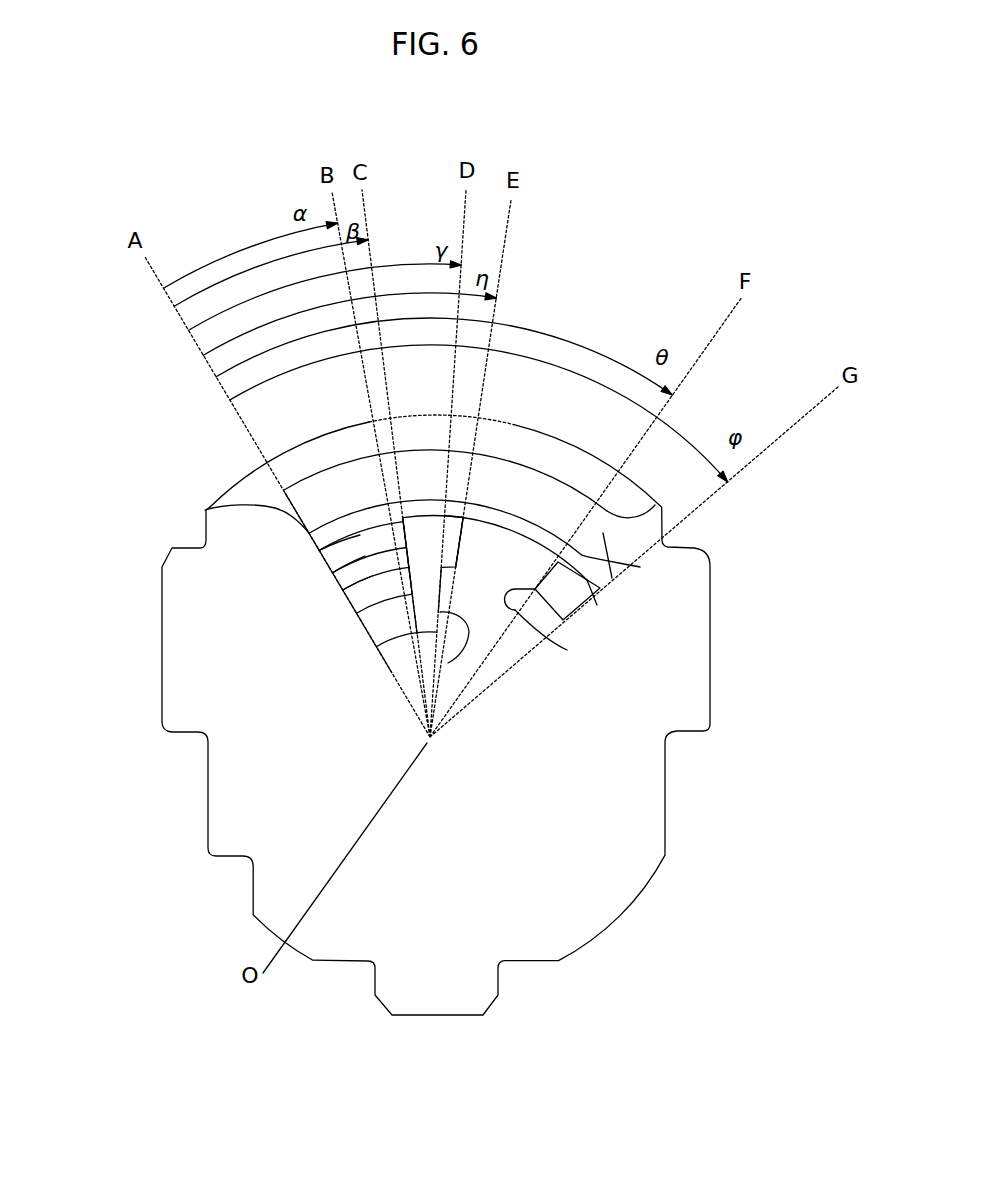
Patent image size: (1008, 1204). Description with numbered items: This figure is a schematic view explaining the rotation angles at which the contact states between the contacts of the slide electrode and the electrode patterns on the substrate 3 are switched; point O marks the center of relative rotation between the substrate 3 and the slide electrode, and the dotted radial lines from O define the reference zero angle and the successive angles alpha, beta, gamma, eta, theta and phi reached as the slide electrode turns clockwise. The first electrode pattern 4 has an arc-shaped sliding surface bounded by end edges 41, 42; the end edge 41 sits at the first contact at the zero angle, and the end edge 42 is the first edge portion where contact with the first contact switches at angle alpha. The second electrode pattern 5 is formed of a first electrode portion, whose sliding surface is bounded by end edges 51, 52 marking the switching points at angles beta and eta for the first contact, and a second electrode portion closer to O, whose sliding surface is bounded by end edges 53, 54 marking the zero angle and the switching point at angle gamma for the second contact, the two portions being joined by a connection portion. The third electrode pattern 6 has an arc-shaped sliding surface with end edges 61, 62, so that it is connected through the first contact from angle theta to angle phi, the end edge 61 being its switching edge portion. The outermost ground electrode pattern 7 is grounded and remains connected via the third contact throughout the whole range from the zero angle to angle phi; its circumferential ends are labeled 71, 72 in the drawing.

The substrate 3 is at (665, 857).
The first electrode pattern 4 is at (358, 547).
The end edge 41 is at (340, 565).
The end edge 42 is at (340, 577).
The second electrode pattern 5 is at (435, 525).
The end edge 51 is at (402, 553).
The end edge 52 is at (467, 522).
The end edge 53 is at (345, 628).
The end edge 54 is at (448, 663).
The third electrode pattern 6 is at (557, 585).
The end edge 61 is at (567, 650).
The end edge 62 is at (597, 605).
The ground electrode pattern 7 is at (605, 533).
The first surface of fourth lobe 71 is at (205, 510).
The second surface of fourth lobe 72 is at (640, 567).